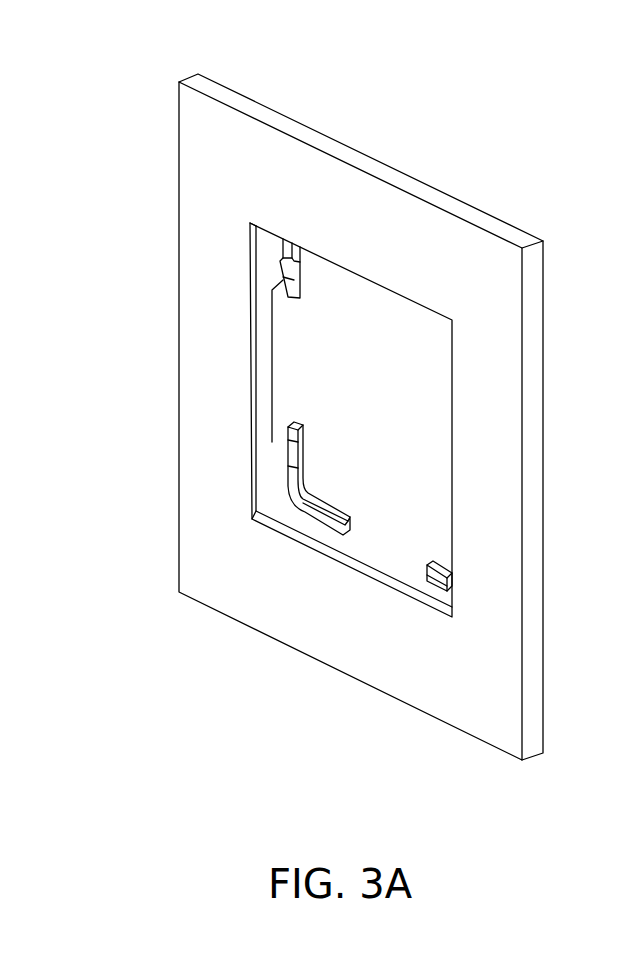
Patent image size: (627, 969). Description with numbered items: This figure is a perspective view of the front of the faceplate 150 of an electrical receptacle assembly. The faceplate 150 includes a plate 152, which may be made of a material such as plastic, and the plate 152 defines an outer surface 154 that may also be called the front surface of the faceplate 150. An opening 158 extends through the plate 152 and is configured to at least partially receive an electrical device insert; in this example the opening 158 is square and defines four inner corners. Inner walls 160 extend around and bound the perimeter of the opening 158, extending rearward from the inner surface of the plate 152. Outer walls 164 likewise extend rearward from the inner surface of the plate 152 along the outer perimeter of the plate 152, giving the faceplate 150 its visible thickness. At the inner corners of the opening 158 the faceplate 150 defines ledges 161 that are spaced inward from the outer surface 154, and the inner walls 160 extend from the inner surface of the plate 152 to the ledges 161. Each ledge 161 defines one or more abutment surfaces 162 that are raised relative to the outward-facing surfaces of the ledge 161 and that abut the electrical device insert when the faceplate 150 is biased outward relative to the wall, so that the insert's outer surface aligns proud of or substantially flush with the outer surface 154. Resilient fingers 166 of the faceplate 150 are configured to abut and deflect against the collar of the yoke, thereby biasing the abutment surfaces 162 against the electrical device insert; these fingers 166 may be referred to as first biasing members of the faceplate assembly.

The faceplate 150 is at (149, 119).
The plate 152 is at (472, 685).
The outer surface 154 is at (280, 182).
The opening 158 is at (305, 373).
The inner walls 160 is at (263, 357).
The ledge 161 is at (280, 512).
The abutment surfaces 162 is at (284, 268).
The outer walls 164 is at (435, 193).
The resilient fingers 166 is at (300, 291).